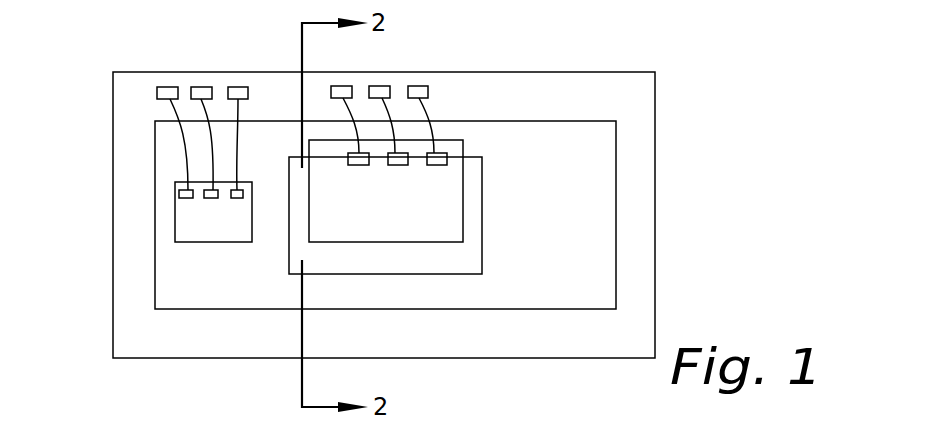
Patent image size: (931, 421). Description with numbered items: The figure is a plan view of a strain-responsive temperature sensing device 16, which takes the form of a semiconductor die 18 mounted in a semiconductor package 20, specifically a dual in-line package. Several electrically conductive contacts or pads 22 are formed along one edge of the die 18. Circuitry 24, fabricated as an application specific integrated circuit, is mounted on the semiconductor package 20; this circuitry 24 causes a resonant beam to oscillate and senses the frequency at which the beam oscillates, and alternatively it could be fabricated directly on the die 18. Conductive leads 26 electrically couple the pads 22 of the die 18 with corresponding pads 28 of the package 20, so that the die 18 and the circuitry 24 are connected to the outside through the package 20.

The strain-responsive temperature sensing device 16 is at (92, 49).
The semiconductor die 18 is at (457, 220).
The semiconductor package 20 is at (650, 206).
The pads 22 is at (394, 165).
The circuitry 24 is at (177, 190).
The conductive leads 26 is at (390, 115).
The pads 28 is at (386, 86).